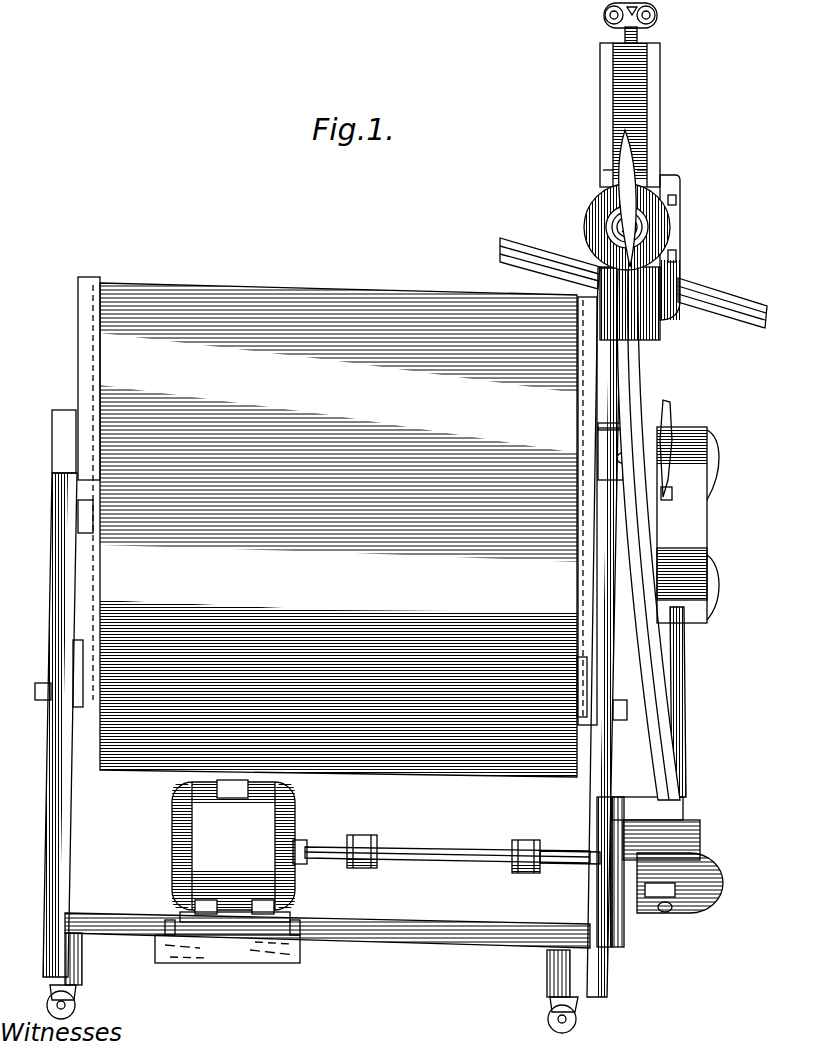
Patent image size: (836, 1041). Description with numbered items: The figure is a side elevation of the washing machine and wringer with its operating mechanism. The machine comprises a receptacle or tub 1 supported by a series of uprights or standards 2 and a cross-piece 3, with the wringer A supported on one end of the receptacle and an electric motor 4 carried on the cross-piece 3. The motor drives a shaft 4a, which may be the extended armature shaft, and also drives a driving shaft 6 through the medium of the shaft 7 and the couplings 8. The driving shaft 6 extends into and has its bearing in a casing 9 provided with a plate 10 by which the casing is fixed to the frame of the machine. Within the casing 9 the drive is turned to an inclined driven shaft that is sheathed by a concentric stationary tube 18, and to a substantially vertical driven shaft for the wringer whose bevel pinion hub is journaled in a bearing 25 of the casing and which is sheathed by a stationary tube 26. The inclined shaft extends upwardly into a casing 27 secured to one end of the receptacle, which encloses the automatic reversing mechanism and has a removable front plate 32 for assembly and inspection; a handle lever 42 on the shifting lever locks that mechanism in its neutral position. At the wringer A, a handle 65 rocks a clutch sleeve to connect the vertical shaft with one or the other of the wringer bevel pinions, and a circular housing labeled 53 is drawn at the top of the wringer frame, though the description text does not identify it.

The receptacle or tub 1 is at (349, 567).
The uprights or standards 2 is at (50, 803).
The cross-piece 3 is at (433, 940).
The electric motor 4 is at (285, 832).
The shaft 4a is at (327, 855).
The driving shaft 6 is at (570, 860).
The shaft 7 is at (452, 857).
The couplings 8 is at (362, 868).
The casing 9 is at (657, 850).
The plate 10 is at (605, 878).
The stationary tube 18 is at (682, 660).
The bearing 25 is at (673, 800).
The stationary tube 26 is at (657, 377).
The casing 27 is at (688, 523).
The removable front plate 32 is at (703, 547).
The handle lever 42 is at (672, 408).
The bearing housing 53 is at (657, 227).
The handle 65 is at (617, 157).
The wringer A is at (605, 113).